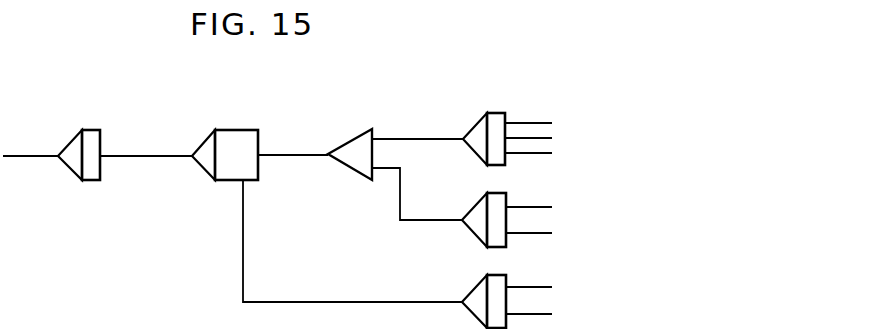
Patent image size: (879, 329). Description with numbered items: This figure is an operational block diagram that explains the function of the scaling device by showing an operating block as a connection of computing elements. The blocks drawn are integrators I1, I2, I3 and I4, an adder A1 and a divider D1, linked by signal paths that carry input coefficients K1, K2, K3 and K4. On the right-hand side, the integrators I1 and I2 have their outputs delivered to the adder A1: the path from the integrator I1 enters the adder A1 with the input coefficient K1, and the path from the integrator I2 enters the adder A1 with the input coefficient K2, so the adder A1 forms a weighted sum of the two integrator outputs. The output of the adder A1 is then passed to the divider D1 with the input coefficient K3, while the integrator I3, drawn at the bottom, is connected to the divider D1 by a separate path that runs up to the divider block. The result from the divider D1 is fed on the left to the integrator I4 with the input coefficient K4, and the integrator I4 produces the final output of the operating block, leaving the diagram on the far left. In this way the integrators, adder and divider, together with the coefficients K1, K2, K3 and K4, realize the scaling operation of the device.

The integrator I1 is at (507, 125).
The integrator I2 is at (503, 213).
The integrator I3 is at (397, 254).
The integrator I4 is at (51, 140).
The adder A1 is at (350, 141).
The divider D1 is at (225, 141).
The input coefficient of the adder K1 is at (417, 128).
The input coefficient of the adder K2 is at (417, 184).
The input coefficient of the divider K3 is at (293, 144).
The input coefficient of the integrator K4 is at (146, 144).